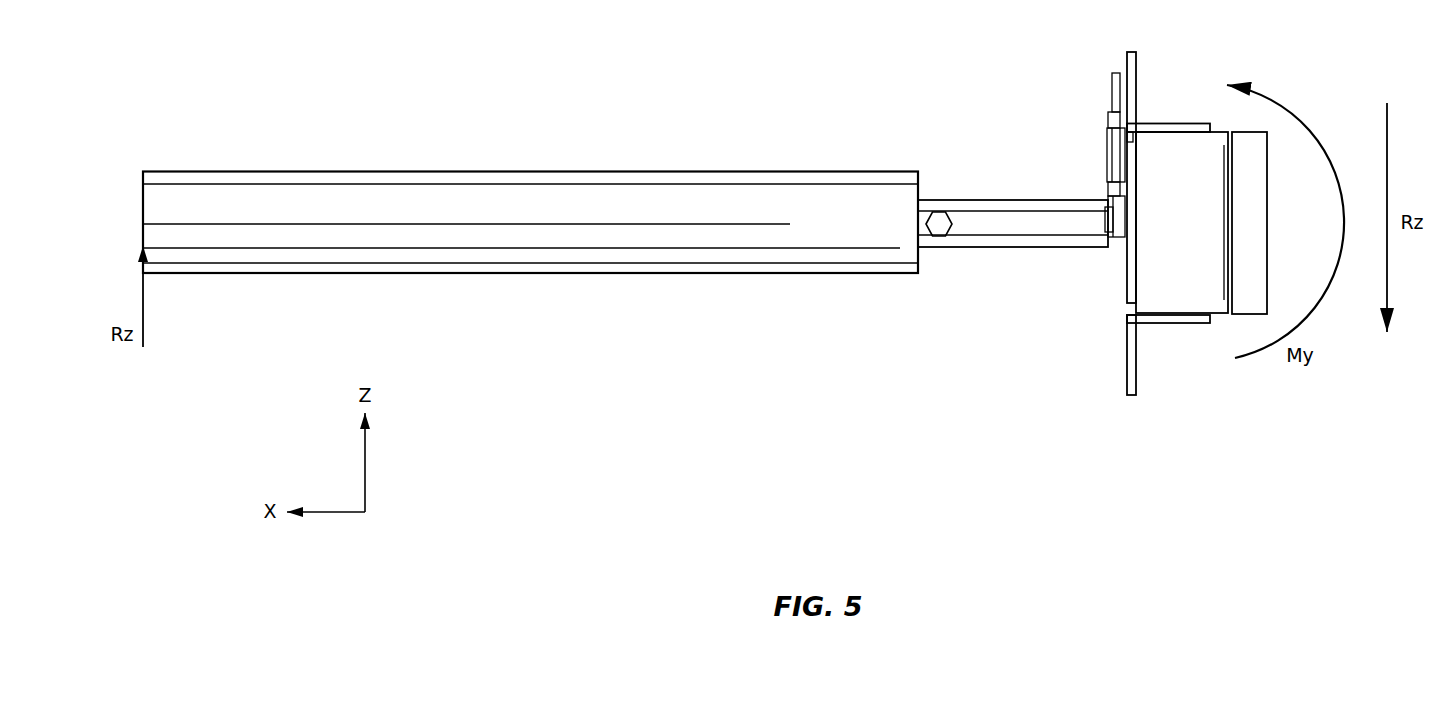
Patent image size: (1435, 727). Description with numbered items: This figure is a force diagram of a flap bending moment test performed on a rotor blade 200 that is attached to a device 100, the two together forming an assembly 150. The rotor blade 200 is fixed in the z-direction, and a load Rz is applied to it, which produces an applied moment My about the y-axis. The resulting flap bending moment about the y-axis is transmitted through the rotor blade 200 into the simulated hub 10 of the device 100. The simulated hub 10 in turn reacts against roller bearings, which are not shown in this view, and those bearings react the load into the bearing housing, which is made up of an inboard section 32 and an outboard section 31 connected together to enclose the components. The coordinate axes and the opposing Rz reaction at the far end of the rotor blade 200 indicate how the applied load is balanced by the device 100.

The rotor blade 200 is at (400, 152).
The assembly 150 is at (775, 393).
The simulated hub 10 is at (1120, 240).
The device 100 is at (1216, 378).
The outboard section 31 is at (1205, 228).
The inboard section 32 is at (1242, 186).